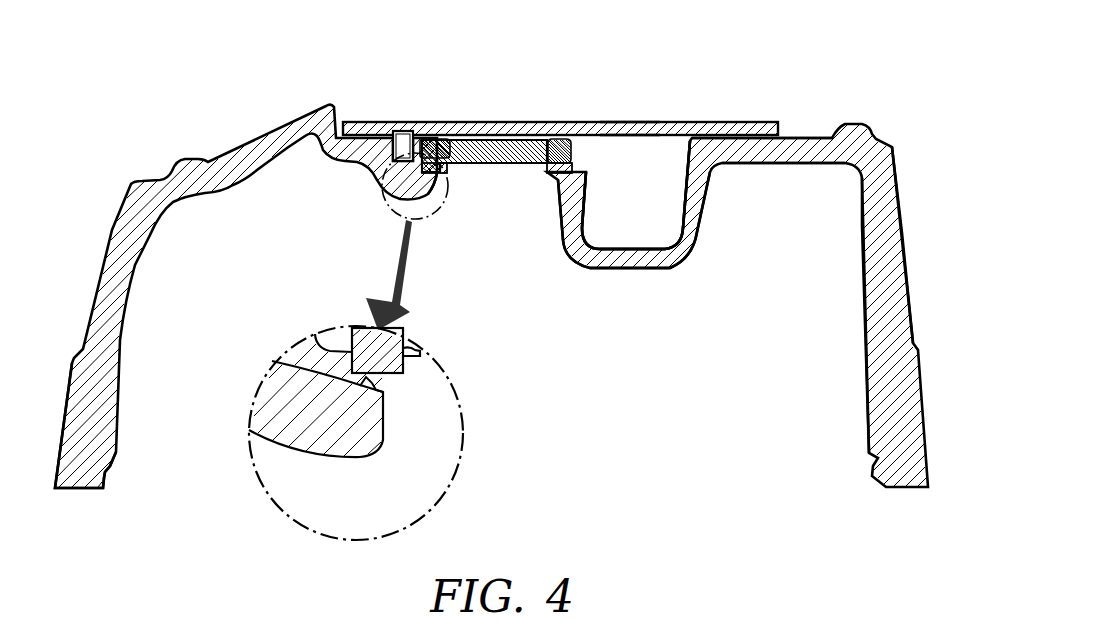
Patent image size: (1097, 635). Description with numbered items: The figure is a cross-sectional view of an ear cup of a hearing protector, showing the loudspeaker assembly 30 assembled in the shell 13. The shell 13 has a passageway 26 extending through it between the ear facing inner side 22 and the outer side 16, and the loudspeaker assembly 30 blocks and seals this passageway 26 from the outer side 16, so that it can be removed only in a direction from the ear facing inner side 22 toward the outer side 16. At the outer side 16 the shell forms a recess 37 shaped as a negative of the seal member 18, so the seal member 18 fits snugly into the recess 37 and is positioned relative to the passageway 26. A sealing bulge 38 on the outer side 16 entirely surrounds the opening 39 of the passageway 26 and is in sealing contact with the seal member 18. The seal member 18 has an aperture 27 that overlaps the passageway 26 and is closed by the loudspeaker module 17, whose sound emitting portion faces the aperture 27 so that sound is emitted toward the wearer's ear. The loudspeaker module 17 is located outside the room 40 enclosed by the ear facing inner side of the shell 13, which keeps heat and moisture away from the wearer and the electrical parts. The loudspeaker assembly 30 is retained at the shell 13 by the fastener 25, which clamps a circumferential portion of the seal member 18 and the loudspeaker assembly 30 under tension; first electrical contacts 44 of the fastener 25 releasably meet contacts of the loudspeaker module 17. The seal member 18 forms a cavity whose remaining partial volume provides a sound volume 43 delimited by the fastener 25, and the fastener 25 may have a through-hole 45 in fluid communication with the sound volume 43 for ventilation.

The shell 13 is at (885, 185).
The outer side 16 is at (250, 142).
The loudspeaker module 17 is at (518, 168).
The seal member 18 is at (632, 238).
The ear facing inner side 22 is at (812, 130).
The fastener 25 is at (757, 128).
The passageway 26 is at (428, 180).
The aperture 27 is at (437, 172).
The loudspeaker assembly 30 is at (412, 138).
The recess 37 is at (688, 232).
The sealing bulge 38 is at (372, 388).
The opening 39 is at (557, 183).
The room 40 is at (168, 440).
The sound volume 43 is at (652, 192).
The first electrical contacts 44 is at (432, 142).
The through-hole 45 is at (630, 130).